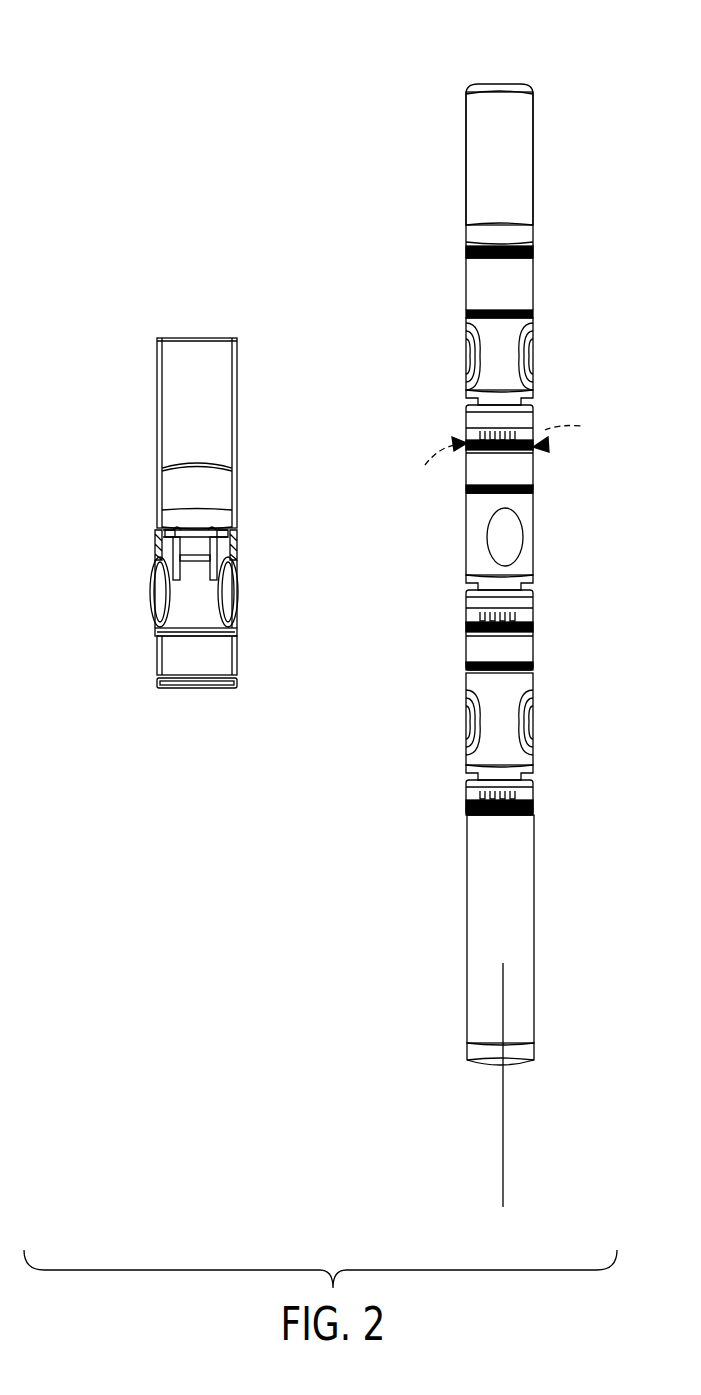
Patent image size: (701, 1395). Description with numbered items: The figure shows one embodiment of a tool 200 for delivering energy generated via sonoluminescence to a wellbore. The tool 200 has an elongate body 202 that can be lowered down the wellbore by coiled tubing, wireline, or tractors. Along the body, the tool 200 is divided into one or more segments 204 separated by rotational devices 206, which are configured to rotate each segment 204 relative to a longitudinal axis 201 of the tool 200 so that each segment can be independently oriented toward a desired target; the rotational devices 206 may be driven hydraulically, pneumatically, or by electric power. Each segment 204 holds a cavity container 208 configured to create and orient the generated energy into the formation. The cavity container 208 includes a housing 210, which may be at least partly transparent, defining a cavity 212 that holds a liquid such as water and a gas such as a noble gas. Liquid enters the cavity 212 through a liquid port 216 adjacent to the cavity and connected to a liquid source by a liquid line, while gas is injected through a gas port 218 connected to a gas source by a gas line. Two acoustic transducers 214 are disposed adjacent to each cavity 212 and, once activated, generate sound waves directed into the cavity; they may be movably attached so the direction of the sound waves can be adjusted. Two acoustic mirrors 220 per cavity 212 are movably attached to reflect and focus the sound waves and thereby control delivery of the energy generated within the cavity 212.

The tool 200 is at (445, 80).
The longitudinal axis 201 is at (500, 1110).
The elongate body 202 is at (485, 143).
The segment 204 is at (466, 363).
The rotational device 206 is at (466, 437).
The cavity container 208 is at (500, 543).
The housing 210 is at (525, 510).
The cavity 212 is at (160, 630).
The acoustic transducer 214 is at (160, 628).
The liquid port 216 is at (237, 535).
The gas port 218 is at (157, 535).
The acoustic mirror 220 is at (237, 628).